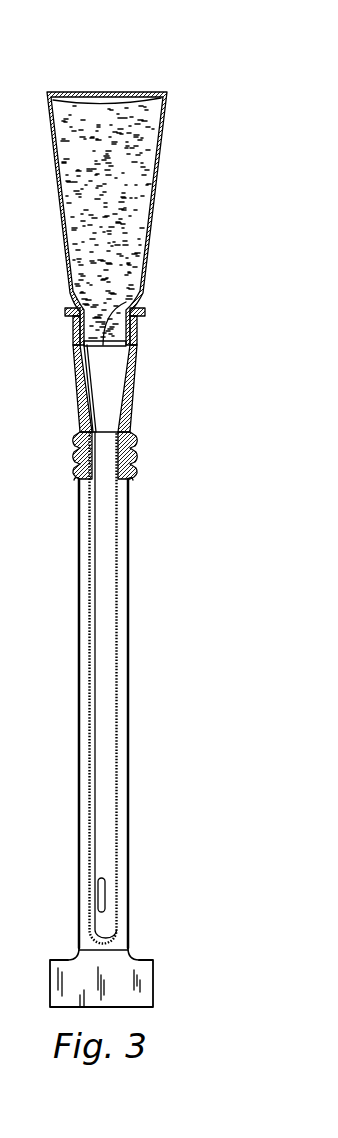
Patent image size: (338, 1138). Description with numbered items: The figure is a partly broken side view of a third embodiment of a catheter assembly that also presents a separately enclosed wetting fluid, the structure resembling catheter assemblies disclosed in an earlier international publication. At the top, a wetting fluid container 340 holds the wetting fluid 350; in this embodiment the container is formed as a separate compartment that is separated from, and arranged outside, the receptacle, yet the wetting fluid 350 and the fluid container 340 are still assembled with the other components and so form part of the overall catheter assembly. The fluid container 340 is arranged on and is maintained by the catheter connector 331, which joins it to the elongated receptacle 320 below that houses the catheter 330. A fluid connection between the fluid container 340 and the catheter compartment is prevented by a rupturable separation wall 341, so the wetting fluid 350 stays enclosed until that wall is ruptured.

The outer tube / tube body 320 is at (129, 543).
The inner tube 330 is at (107, 648).
The catheter connector 331 is at (133, 362).
The wetting fluid container 340 is at (145, 248).
The rupturable separation wall 341 is at (143, 300).
The wetting fluid 350 is at (120, 155).